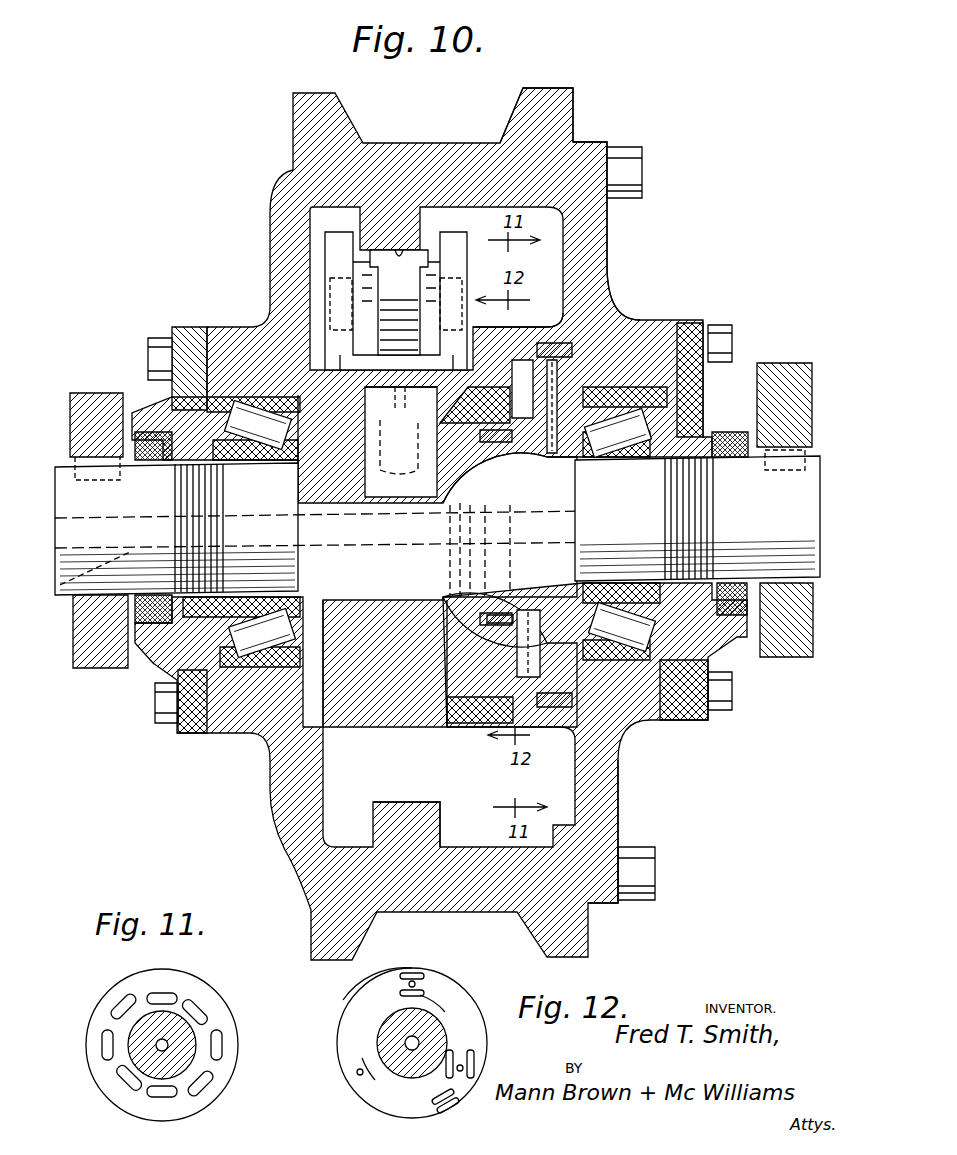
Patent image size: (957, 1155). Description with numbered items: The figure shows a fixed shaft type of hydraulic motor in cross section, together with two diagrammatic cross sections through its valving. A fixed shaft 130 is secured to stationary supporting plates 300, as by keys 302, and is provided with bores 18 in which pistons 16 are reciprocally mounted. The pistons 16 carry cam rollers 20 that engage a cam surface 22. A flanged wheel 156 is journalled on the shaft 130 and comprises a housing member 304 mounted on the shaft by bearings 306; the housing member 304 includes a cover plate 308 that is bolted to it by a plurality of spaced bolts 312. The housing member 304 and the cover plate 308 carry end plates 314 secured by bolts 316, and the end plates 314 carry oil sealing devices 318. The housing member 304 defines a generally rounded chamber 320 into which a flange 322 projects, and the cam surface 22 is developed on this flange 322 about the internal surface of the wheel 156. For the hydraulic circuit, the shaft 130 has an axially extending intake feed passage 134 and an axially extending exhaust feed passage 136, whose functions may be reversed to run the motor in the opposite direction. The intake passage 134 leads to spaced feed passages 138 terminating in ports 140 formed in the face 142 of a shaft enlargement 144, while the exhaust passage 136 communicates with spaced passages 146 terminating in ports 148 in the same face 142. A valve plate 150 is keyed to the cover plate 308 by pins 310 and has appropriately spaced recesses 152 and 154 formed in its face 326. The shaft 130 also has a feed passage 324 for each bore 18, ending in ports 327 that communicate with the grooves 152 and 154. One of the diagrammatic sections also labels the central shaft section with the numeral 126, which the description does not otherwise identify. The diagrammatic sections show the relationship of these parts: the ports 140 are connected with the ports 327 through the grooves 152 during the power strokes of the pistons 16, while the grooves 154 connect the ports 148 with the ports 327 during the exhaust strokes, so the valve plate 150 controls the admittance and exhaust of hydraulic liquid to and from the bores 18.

In FIG. 10, the pistons 16 is at (372, 497).
In FIG. 10, the bores 18 is at (325, 503).
In FIG. 10, the cam rollers 20 is at (365, 285).
In FIG. 10, the cam surface 22 is at (402, 252).
In FIG. 12, the shaft 126 is at (408, 1043).
In FIG. 10, the fixed shaft 130 is at (66, 480).
In FIG. 11, the fixed shaft 130 is at (138, 1062).
In FIG. 12, the fixed shaft 130 is at (458, 1100).
In FIG. 10, the intake feed passage 134 is at (70, 590).
In FIG. 10, the exhaust feed passage 136 is at (770, 512).
In FIG. 11, the exhaust feed passage 136 is at (160, 1043).
In FIG. 10, the feed passages 138 is at (470, 561).
In FIG. 10, the ports 140 is at (548, 352).
In FIG. 12, the ports 140 is at (352, 1078).
In FIG. 10, the face 142 is at (530, 680).
In FIG. 12, the face 142 is at (455, 1002).
In FIG. 10, the shaft enlargement 144 is at (373, 727).
In FIG. 12, the shaft enlargement 144 is at (358, 990).
In FIG. 10, the passages 146 is at (505, 532).
In FIG. 10, the ports 148 is at (447, 600).
In FIG. 12, the ports 148 is at (450, 1014).
In FIG. 10, the valve plate 150 is at (560, 312).
In FIG. 11, the valve plate 150 is at (220, 1094).
In FIG. 10, the recesses 152 is at (556, 453).
In FIG. 11, the recesses 152 is at (205, 1008).
In FIG. 10, the recesses 154 is at (545, 597).
In FIG. 11, the recesses 154 is at (101, 1054).
In FIG. 10, the flanged wheel 156 is at (574, 104).
In FIG. 10, the stationary supporting plates 300 is at (76, 669).
In FIG. 10, the keys 302 is at (97, 450).
In FIG. 10, the housing member 304 is at (270, 208).
In FIG. 10, the bearings 306 is at (261, 683).
In FIG. 10, the cover plate 308 is at (608, 222).
In FIG. 10, the pins 310 is at (600, 318).
In FIG. 10, the bolts 312 is at (640, 169).
In FIG. 10, the end plates 314 is at (188, 326).
In FIG. 10, the bolts 316 is at (733, 341).
In FIG. 10, the oil sealing devices 318 is at (150, 628).
In FIG. 10, the chamber 320 is at (330, 806).
In FIG. 10, the flange 322 is at (370, 826).
In FIG. 10, the feed passage 324 is at (439, 550).
In FIG. 10, the face 326 is at (490, 700).
In FIG. 10, the ports 327 is at (476, 506).
In FIG. 12, the ports 327 is at (400, 985).